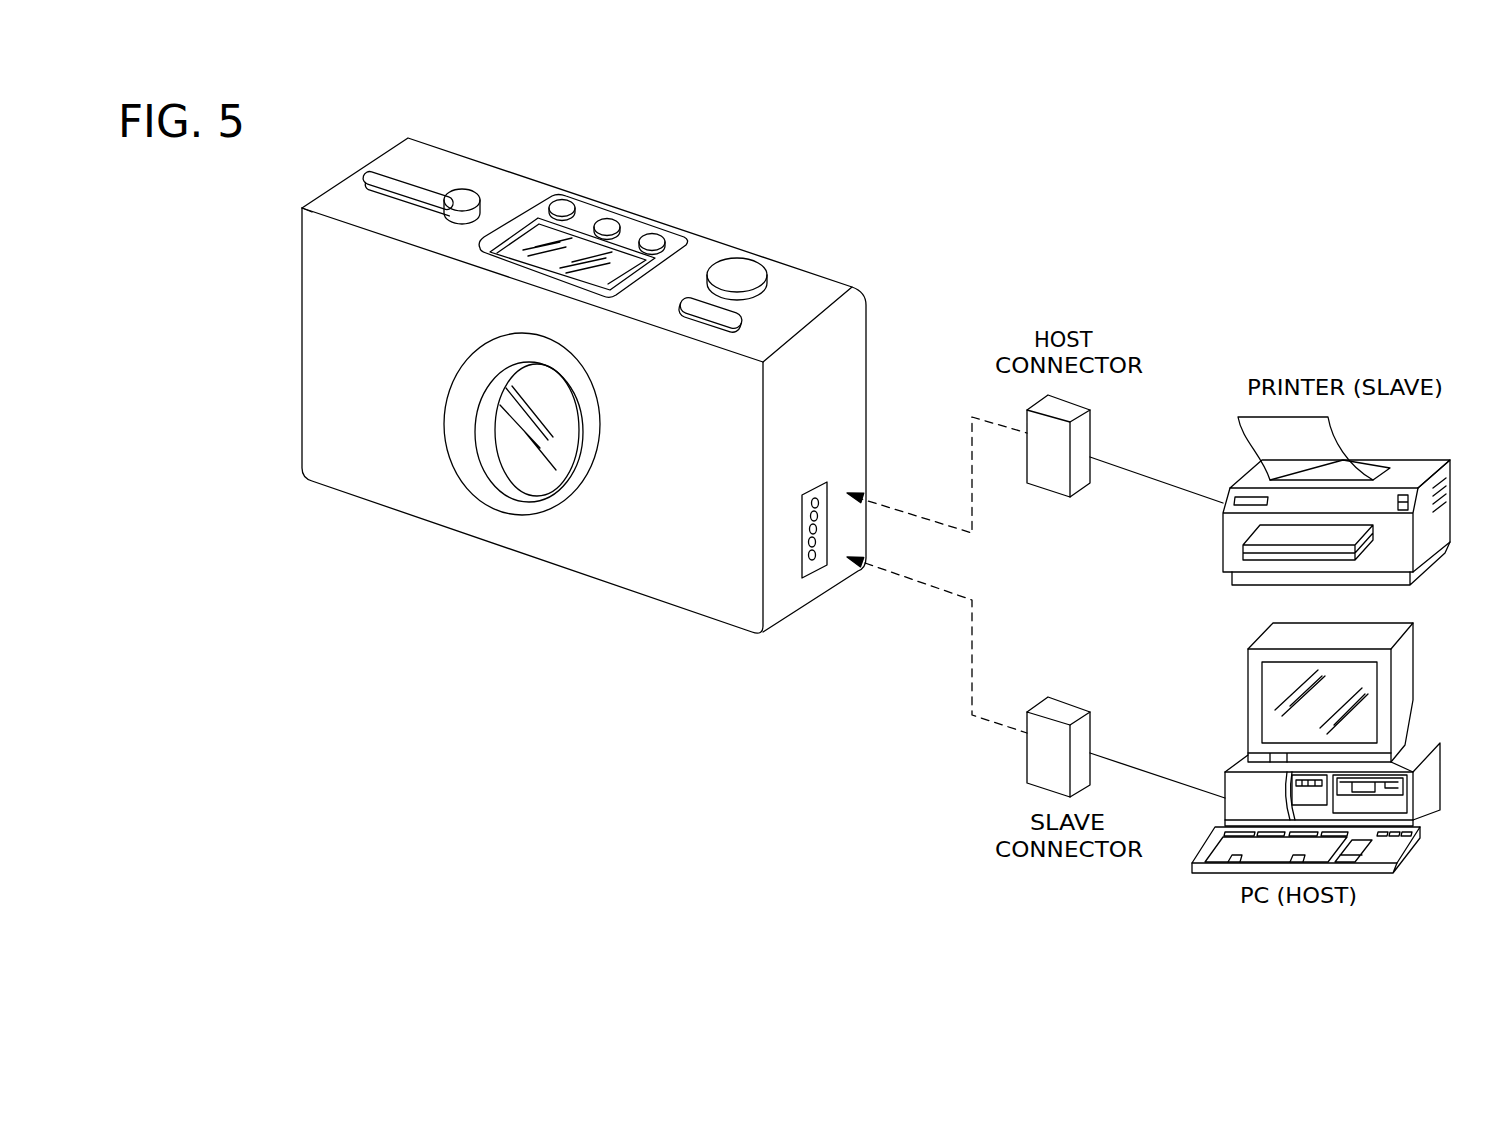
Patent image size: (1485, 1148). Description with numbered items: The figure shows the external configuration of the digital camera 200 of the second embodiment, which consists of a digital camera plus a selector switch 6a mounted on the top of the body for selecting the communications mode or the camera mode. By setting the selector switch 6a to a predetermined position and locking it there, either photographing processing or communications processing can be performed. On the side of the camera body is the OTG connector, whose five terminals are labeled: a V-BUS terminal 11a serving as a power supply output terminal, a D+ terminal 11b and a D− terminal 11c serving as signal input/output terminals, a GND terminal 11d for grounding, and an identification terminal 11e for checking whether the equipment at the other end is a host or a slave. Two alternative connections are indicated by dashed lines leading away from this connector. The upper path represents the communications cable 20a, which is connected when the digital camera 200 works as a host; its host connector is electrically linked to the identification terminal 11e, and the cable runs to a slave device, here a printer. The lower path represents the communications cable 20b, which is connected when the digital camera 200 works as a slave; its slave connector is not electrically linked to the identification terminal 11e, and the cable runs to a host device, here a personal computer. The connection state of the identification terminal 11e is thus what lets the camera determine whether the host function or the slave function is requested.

The digital camera 200 is at (697, 198).
The selector switch 6a is at (462, 196).
The V-BUS terminal 11a is at (810, 502).
The D+ terminal 11b is at (809, 515).
The D− terminal 11c is at (808, 529).
The GND terminal 11d is at (807, 542).
The identification terminal 11e is at (806, 555).
The communications cable 20a is at (1158, 468).
The communications cable 20b is at (1100, 728).